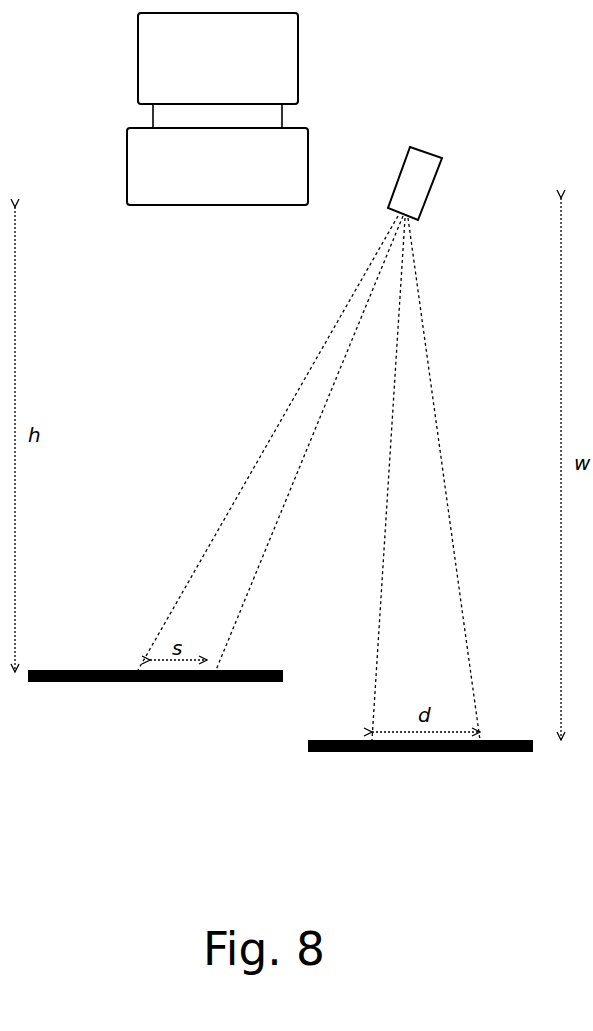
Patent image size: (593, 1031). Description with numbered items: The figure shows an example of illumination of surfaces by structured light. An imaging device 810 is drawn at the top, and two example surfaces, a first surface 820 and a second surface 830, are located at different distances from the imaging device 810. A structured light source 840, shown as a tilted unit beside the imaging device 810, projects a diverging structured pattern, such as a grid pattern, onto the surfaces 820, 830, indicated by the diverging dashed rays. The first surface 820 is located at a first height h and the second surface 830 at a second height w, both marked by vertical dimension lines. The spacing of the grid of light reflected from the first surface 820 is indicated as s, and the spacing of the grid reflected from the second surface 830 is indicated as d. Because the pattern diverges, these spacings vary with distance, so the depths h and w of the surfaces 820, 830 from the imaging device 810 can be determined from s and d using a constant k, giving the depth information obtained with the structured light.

The imaging device 810 is at (217, 109).
The first surface 820 is at (155, 704).
The second surface 830 is at (420, 773).
The structured light source 840 is at (447, 154).